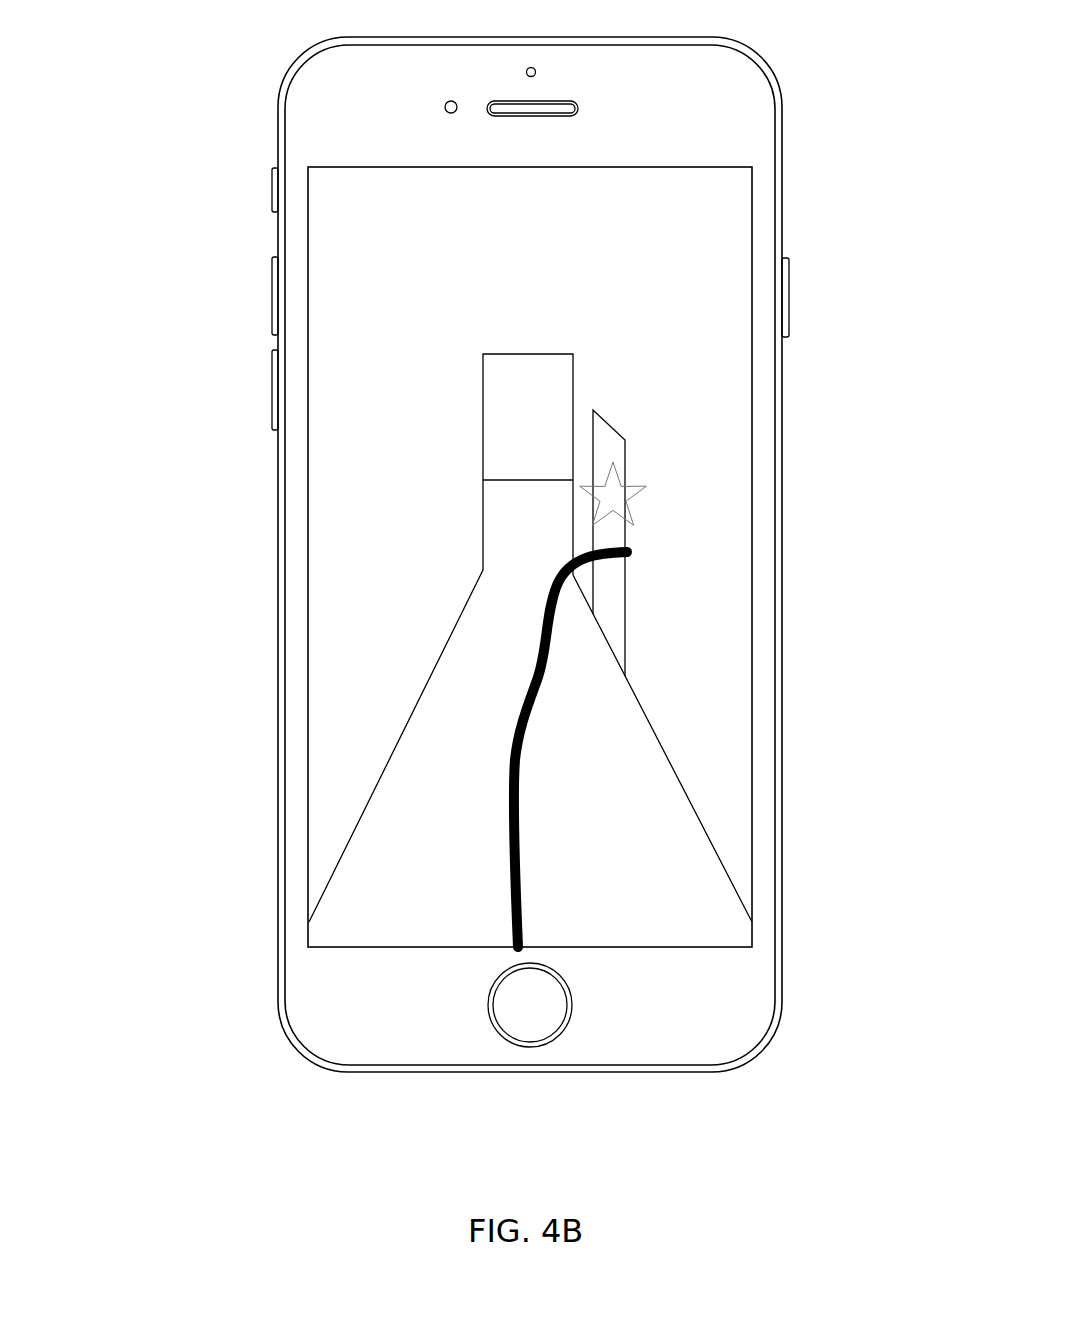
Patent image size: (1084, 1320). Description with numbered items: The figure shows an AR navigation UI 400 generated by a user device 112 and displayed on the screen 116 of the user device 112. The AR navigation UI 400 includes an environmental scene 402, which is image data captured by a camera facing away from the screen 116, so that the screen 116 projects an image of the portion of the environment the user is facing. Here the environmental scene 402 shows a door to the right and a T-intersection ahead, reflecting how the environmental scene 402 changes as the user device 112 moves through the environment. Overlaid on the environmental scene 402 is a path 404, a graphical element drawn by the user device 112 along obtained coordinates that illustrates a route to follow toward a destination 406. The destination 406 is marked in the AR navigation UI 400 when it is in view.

The user device 112 is at (781, 87).
The screen 116 is at (753, 526).
The AR navigation UI 400 is at (723, 269).
The environmental scene 402 is at (483, 442).
The path 404 is at (513, 747).
The destination 406 is at (612, 462).